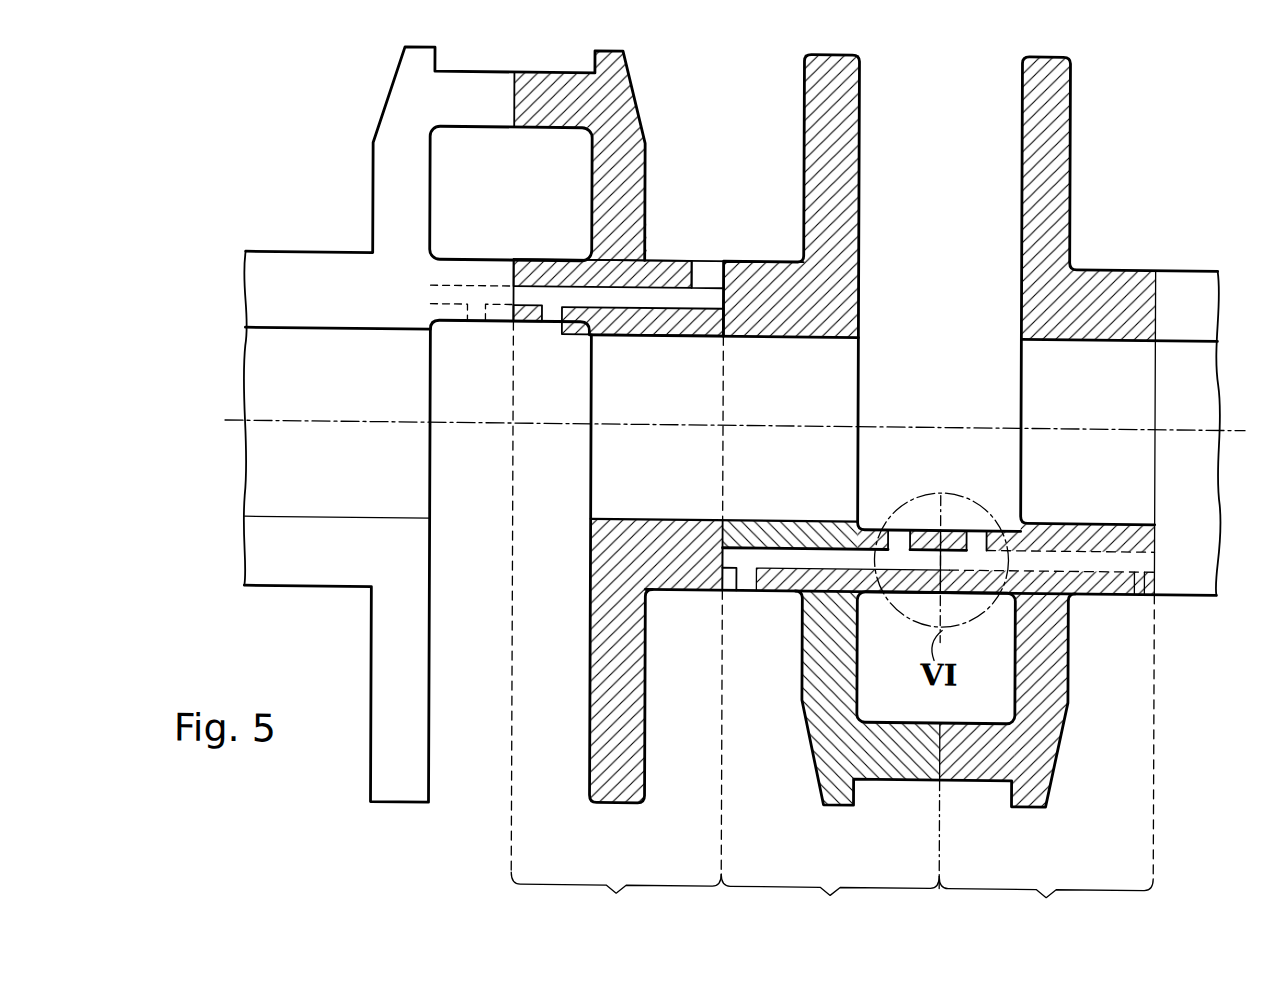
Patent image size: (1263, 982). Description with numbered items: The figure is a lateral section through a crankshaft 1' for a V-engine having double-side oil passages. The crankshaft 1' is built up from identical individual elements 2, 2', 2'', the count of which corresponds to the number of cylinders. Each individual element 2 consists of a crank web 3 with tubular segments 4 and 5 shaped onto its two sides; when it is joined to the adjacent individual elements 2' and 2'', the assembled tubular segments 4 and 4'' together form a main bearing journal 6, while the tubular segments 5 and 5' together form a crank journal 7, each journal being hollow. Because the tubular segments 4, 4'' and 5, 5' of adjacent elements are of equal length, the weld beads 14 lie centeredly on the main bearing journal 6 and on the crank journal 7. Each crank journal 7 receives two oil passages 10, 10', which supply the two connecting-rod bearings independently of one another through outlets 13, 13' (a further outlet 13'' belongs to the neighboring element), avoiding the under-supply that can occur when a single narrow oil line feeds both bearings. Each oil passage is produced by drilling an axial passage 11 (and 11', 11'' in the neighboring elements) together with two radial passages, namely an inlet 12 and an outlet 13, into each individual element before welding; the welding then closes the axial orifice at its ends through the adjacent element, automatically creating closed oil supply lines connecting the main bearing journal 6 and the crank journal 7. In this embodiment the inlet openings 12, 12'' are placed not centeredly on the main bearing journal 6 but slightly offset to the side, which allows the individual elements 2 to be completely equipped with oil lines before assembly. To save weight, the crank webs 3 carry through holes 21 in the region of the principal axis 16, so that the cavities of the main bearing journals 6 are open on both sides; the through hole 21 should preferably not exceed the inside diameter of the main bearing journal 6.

The crankshaft 1' is at (732, 471).
The individual element 2 is at (830, 758).
The individual element 2' is at (1046, 901).
The individual element 2'' is at (617, 623).
The crank web 3 is at (845, 140).
The tubular segment 4 is at (753, 265).
The tubular segment 4'' is at (658, 257).
The tubular segment 5 is at (934, 724).
The tubular segment 5' is at (977, 789).
The main bearing journal 6 is at (752, 262).
The crank journal 7 is at (993, 747).
The oil passage 10 is at (955, 618).
The oil passage 10' is at (1086, 724).
The axial passage 11 is at (806, 442).
The axial passage 11' is at (1088, 501).
The axial passage 11'' is at (643, 348).
The inlet opening 12 is at (736, 609).
The inlet opening 12'' is at (717, 264).
The outlet 13 is at (912, 500).
The outlet 13' is at (1056, 501).
The outlet 13'' is at (499, 336).
The weld bead 14 is at (720, 457).
The principal axis 16 is at (933, 425).
The through hole 21 is at (843, 392).